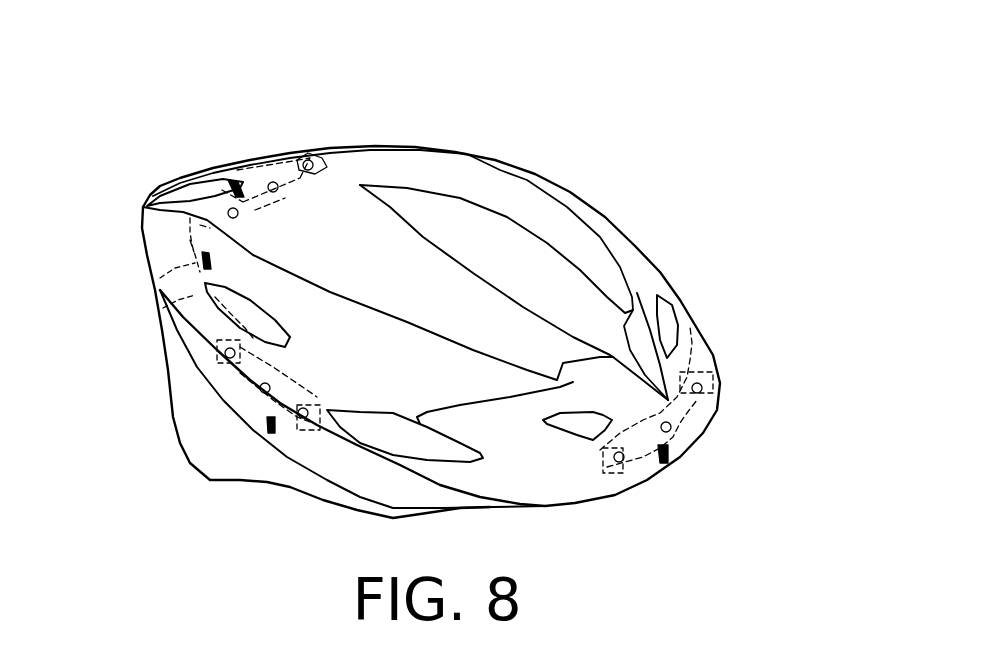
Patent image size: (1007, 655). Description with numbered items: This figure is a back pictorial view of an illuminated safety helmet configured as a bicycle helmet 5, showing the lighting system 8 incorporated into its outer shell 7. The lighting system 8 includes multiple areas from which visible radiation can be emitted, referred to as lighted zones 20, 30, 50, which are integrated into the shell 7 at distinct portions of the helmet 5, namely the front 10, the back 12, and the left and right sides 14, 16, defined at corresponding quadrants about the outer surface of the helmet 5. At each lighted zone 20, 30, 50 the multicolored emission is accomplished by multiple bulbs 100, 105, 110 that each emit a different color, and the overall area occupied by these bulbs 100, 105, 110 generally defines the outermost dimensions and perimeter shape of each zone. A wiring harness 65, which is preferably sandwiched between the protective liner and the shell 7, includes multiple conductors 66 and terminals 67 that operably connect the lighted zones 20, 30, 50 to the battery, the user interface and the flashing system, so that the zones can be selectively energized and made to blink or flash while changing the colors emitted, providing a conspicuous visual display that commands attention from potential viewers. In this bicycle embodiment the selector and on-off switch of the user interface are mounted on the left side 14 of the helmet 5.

The helmet 5 is at (703, 217).
The shell 7 is at (600, 265).
The lighting system 8 is at (316, 96).
The front 10 is at (793, 482).
The back 12 is at (150, 167).
The left side 14 is at (548, 150).
The right side 16 is at (143, 537).
The lighted zone 20 is at (673, 467).
The lighted zone 30 is at (213, 170).
The lighted zone 50 is at (253, 437).
The wiring harness 65 is at (187, 235).
The conductors 66 is at (205, 286).
The terminals 67 is at (175, 172).
The bulb 100 is at (322, 160).
The bulb 105 is at (243, 183).
The bulb 110 is at (143, 207).